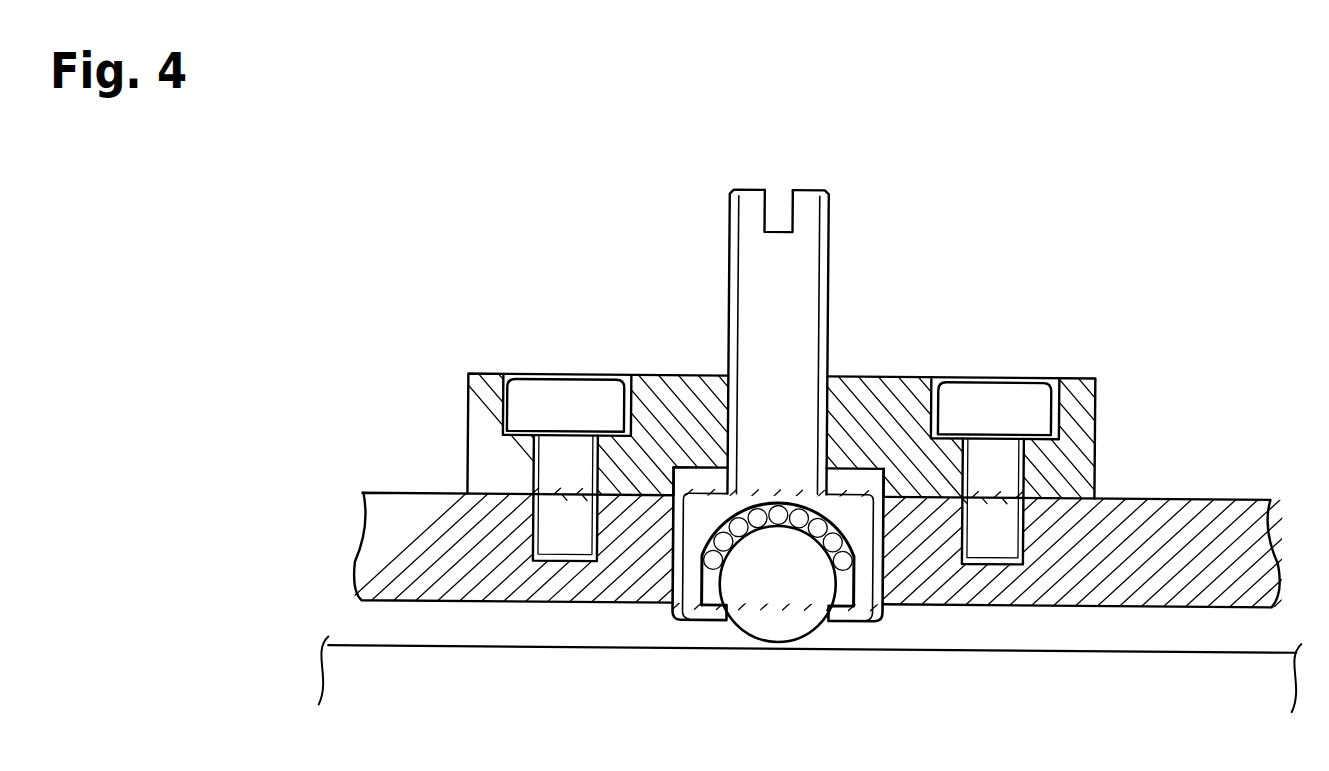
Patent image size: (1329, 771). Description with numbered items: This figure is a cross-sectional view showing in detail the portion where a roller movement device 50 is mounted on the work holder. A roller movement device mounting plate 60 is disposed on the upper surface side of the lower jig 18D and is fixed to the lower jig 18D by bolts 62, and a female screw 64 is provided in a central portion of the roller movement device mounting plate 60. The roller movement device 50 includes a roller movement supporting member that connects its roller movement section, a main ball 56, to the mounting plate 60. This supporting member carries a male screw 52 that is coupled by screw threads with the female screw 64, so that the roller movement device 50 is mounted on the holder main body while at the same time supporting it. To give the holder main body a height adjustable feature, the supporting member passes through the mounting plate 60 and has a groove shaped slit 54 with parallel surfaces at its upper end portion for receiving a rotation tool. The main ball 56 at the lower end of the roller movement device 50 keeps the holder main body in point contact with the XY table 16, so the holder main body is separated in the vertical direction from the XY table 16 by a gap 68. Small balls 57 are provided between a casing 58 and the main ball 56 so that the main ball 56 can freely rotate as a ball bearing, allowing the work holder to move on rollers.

The roller movement device 50 is at (750, 265).
The groove shaped slit 54 is at (790, 207).
The male screw 52 is at (728, 317).
The female screw 64 is at (830, 427).
The roller movement device mounting plate 60 is at (1083, 412).
The bolts 62 is at (997, 400).
The gap 68 is at (481, 627).
The lower jig 18D is at (1240, 520).
The XY table 16 is at (602, 682).
The main ball 56 is at (781, 618).
The small balls 57 is at (715, 562).
The casing 58 is at (878, 620).